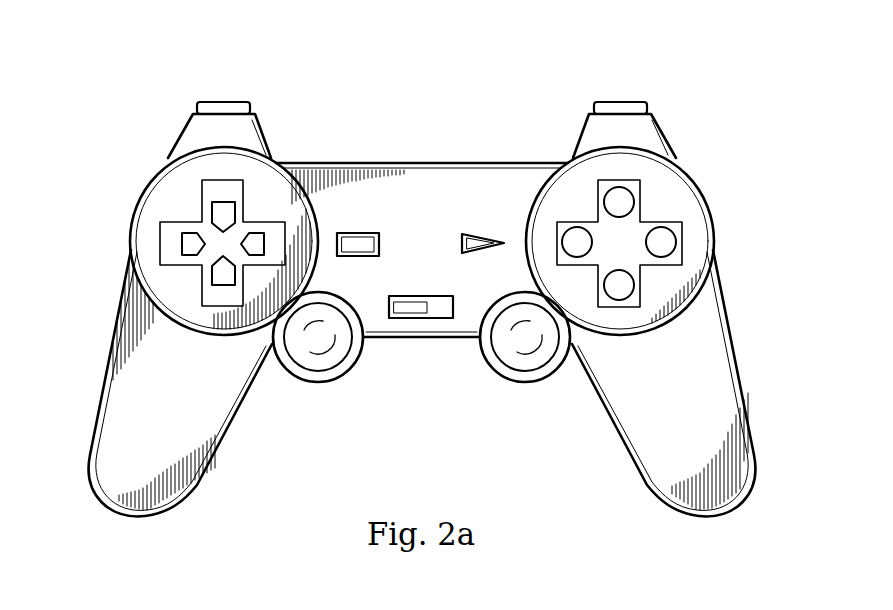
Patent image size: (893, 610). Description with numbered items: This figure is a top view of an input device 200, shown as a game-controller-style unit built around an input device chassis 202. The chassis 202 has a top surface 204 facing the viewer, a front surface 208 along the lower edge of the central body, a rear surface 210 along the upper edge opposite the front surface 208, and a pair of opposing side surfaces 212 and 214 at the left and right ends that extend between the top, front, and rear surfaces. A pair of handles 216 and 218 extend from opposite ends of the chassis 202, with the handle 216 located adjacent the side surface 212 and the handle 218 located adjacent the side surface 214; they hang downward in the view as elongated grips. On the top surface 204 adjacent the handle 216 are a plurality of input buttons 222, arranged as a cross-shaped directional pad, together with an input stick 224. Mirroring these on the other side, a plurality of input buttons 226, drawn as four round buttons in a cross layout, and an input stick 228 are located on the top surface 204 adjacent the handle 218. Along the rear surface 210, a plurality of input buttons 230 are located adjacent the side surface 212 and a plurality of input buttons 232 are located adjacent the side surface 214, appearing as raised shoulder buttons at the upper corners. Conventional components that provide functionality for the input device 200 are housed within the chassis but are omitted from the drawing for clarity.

The input device 200 is at (117, 75).
The input device chassis 202 is at (695, 181).
The top surface 204 is at (425, 183).
The front surface 208 is at (410, 338).
The rear surface 210 is at (508, 163).
The side surface 212 is at (130, 231).
The side surface 214 is at (717, 228).
The handle 216 is at (132, 513).
The handle 218 is at (710, 515).
The input buttons 222 is at (212, 213).
The input stick 224 is at (298, 368).
The input buttons 226 is at (577, 230).
The input stick 228 is at (545, 370).
The input buttons 230 is at (222, 100).
The input buttons 232 is at (620, 100).